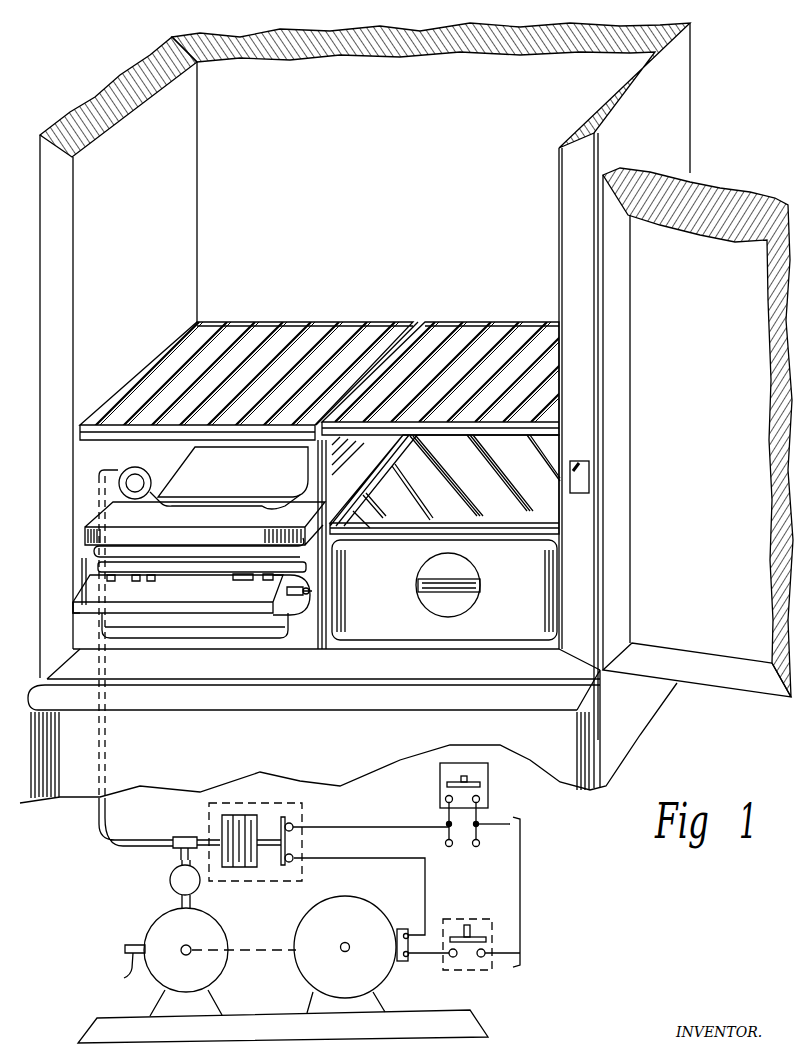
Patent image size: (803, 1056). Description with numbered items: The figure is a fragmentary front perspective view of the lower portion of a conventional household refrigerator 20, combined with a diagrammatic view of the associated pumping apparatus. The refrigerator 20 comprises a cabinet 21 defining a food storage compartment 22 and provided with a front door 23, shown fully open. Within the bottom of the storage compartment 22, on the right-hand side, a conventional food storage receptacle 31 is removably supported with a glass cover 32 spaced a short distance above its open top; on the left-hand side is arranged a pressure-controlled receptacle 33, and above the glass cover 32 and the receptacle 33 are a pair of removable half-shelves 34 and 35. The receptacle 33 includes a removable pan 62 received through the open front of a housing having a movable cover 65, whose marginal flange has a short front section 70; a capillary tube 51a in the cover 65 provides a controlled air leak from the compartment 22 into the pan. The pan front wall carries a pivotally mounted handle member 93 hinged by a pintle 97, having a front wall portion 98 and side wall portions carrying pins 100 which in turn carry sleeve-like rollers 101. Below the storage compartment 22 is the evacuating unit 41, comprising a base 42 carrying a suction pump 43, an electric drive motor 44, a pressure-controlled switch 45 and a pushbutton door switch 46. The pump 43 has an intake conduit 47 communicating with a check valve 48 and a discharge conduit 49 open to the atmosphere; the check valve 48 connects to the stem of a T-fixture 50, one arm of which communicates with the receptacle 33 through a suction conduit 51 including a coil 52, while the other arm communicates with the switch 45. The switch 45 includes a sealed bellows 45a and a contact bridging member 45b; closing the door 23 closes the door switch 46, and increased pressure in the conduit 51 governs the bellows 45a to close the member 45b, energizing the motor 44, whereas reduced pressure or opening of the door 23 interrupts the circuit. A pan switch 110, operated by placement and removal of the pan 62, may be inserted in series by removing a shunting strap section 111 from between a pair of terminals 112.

The household refrigerator 20 is at (50, 81).
The cabinet 21 is at (48, 165).
The food storage compartment 22 is at (348, 243).
The front door 23 is at (674, 344).
The food storage receptacle 31 is at (361, 596).
The glass cover 32 is at (458, 486).
The pressure-controlled receptacle 33 is at (210, 474).
The half-shelf 34 is at (520, 348).
The half-shelf 35 is at (275, 348).
The unit 41 is at (74, 914).
The base 42 is at (458, 1030).
The suction pump 43 is at (172, 940).
The electric drive motor 44 is at (336, 930).
The pressure-controlled switch 45 is at (304, 813).
The sealed bellows 45a is at (240, 864).
The contact bridging member 45b is at (304, 842).
The door switch 46 is at (589, 470).
The intake conduit 47 is at (182, 902).
The check valve 48 is at (172, 880).
The discharge conduit 49 is at (122, 968).
The T-fixture 50 is at (187, 840).
The suction conduit 51 is at (98, 824).
The capillary tube 51a is at (268, 505).
The coil 52 is at (140, 495).
The pan 62 is at (347, 602).
The cover 65 is at (258, 455).
The front section 70 is at (223, 535).
The handle member 93 is at (228, 613).
The pintle 97 is at (172, 579).
The front wall portion 98 is at (88, 596).
The pin 100 is at (309, 590).
The roller 101 is at (286, 590).
The pan switch 110 is at (440, 783).
The section of wiring 111 is at (466, 846).
The terminals 112 is at (478, 823).